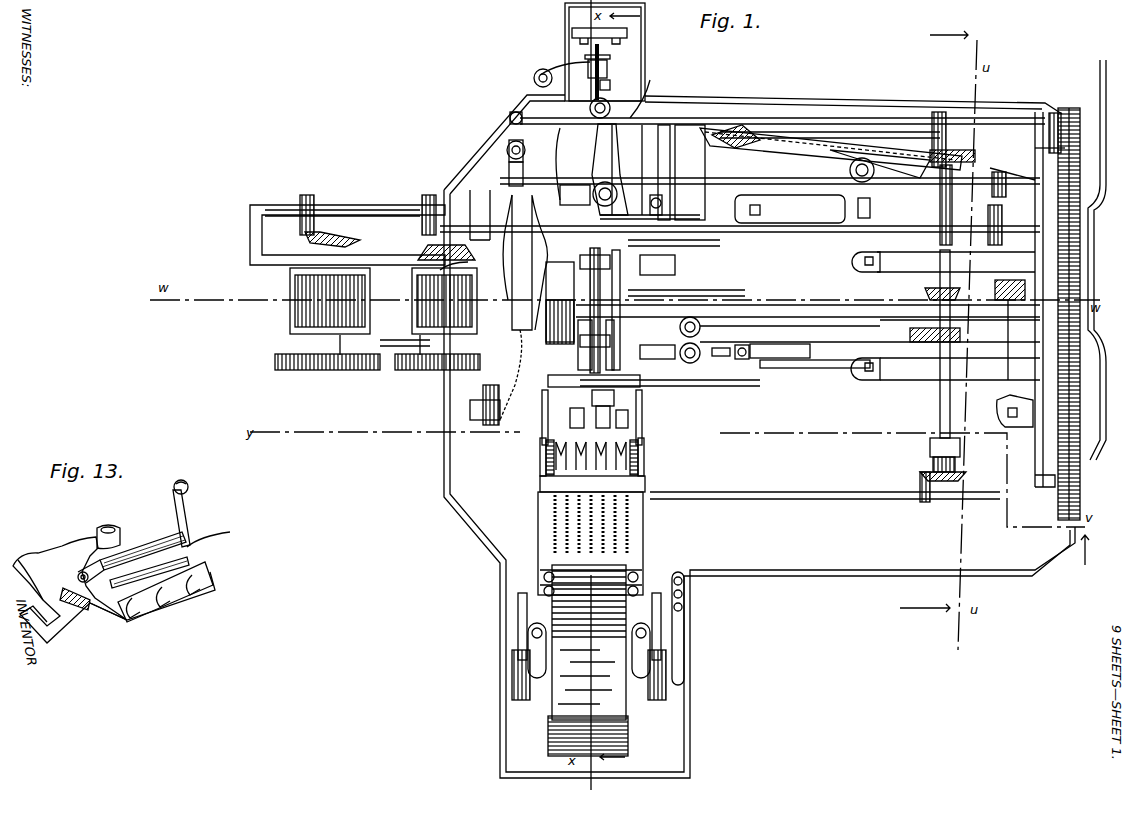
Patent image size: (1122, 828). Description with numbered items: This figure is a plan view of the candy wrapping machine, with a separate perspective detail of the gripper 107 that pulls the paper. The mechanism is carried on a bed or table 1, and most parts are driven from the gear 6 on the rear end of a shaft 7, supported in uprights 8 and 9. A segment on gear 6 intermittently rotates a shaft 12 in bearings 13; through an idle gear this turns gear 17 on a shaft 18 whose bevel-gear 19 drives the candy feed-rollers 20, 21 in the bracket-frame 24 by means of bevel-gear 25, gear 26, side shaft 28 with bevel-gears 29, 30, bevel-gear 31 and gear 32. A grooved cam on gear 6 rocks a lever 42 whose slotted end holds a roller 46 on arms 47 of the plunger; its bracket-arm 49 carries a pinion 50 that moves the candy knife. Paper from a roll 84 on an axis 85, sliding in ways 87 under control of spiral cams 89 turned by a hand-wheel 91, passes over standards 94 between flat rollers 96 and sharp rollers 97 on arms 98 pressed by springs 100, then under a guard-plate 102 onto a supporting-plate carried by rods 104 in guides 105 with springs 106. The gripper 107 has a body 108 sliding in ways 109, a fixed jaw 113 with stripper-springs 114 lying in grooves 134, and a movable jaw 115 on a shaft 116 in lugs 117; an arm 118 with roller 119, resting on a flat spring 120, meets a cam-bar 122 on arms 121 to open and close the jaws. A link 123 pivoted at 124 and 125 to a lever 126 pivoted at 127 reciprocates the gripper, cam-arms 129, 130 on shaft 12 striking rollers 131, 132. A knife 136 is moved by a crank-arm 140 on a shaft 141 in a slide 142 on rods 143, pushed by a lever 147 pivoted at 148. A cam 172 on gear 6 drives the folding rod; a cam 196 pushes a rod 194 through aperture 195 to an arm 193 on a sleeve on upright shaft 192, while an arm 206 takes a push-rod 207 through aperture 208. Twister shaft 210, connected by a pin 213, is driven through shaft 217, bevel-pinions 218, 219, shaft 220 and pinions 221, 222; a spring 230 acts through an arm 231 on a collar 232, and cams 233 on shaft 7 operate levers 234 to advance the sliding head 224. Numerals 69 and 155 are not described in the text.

In FIG. 1, the bed or table 1 is at (908, 570).
In FIG. 1, the gear 6 is at (1080, 385).
In FIG. 1, the shaft 7 is at (803, 306).
In FIG. 1, the upright or bracket 8 is at (988, 388).
In FIG. 1, the upright or bracket 9 is at (560, 302).
In FIG. 1, the longitudinal shaft 12 is at (780, 180).
In FIG. 1, the bearings 13 is at (866, 200).
In FIG. 1, the gear 17 is at (988, 215).
In FIG. 1, the longitudinal shaft 18 is at (825, 230).
In FIG. 1, the bevel-gear 19 is at (474, 200).
In FIG. 1, the feed-rollers 20 is at (293, 318).
In FIG. 1, the feed-rollers 21 is at (420, 328).
In FIG. 1, the bracket-frame 24 is at (266, 265).
In FIG. 1, the bevel-gear 25 is at (450, 262).
In FIG. 1, the gear 26 is at (415, 370).
In FIG. 1, the side shaft 28 is at (350, 214).
In FIG. 1, the bevel-gear 29 is at (425, 195).
In FIG. 1, the bevel-gear 30 is at (305, 195).
In FIG. 1, the bevel-gear 31 is at (322, 230).
In FIG. 1, the gear 32 is at (305, 370).
In FIG. 1, the lever 42 is at (1012, 320).
In FIG. 1, the roller 46 is at (557, 322).
In FIG. 1, the arms 47 is at (612, 256).
In FIG. 1, the bracket-arm 49 is at (619, 345).
In FIG. 1, the pinion 50 is at (576, 345).
In FIG. 1, the rod 69 is at (624, 258).
In FIG. 1, the roll of paper 84 is at (612, 740).
In FIG. 1, the axis 85 is at (589, 642).
In FIG. 1, the vertical ways 87 is at (589, 661).
In FIG. 1, the spiral cams 89 is at (522, 593).
In FIG. 1, the hand-wheel 91 is at (694, 628).
In FIG. 1, the standards 94 is at (538, 535).
In FIG. 1, the flat rollers 96 is at (570, 418).
In FIG. 1, the rollers 97 is at (620, 419).
In FIG. 1, the arms 98 is at (592, 484).
In FIG. 1, the spring 100 is at (556, 506).
In FIG. 1, the guard-plate 102 is at (594, 380).
In FIG. 1, the rods 104 is at (642, 410).
In FIG. 1, the guides or keepers 105 is at (546, 451).
In FIG. 1, the springs 106 is at (540, 470).
In FIG. 1, the gripper 107 is at (650, 241).
In FIG. 13, the gripper 107 is at (108, 529).
In FIG. 1, the slide or body 108 is at (565, 135).
In FIG. 13, the slide or body 108 is at (38, 558).
In FIG. 1, the ways 109 is at (560, 153).
In FIG. 13, the fixed jaw 113 is at (130, 618).
In FIG. 13, the stripper-springs 114 is at (205, 580).
In FIG. 13, the movable jaw 115 is at (196, 558).
In FIG. 13, the shaft 116 is at (78, 576).
In FIG. 13, the lugs 117 is at (160, 540).
In FIG. 1, the arm 118 is at (652, 215).
In FIG. 13, the arm 118 is at (190, 528).
In FIG. 13, the antifriction-roller 119 is at (187, 490).
In FIG. 1, the flat spring 120 is at (662, 205).
In FIG. 13, the flat spring 120 is at (225, 534).
In FIG. 1, the arms 121 is at (676, 268).
In FIG. 1, the cam-bar 122 is at (640, 292).
In FIG. 1, the link 123 is at (612, 157).
In FIG. 1, the pivot 124 is at (598, 185).
In FIG. 1, the pivot 125 is at (592, 106).
In FIG. 1, the lever 126 is at (831, 149).
In FIG. 1, the pivot 127 is at (874, 173).
In FIG. 1, the cam-arm 129 is at (935, 200).
In FIG. 1, the cam-arm 130 is at (710, 162).
In FIG. 1, the antifriction-roller 131 is at (950, 156).
In FIG. 1, the antifriction-roller 132 is at (730, 130).
In FIG. 13, the grooves 134 is at (190, 590).
In FIG. 1, the knife 136 is at (670, 381).
In FIG. 1, the crank-arm 140 is at (746, 361).
In FIG. 1, the shaft 141 is at (725, 360).
In FIG. 1, the slide 142 is at (716, 331).
In FIG. 1, the vertical rods 143 is at (700, 322).
In FIG. 1, the lever 147 is at (785, 345).
In FIG. 1, the pivot 148 is at (870, 334).
In FIG. 1, the block 155 is at (575, 200).
In FIG. 1, the cam 172 is at (1103, 52).
In FIG. 1, the upright shaft 192 is at (503, 152).
In FIG. 1, the arm 193 is at (512, 113).
In FIG. 1, the rod 194 is at (618, 117).
In FIG. 1, the guiding-aperture 195 is at (1035, 116).
In FIG. 1, the cam 196 is at (1055, 113).
In FIG. 1, the arm 206 is at (509, 176).
In FIG. 1, the push-rod 207 is at (790, 209).
In FIG. 1, the guiding-aperture 208 is at (1002, 166).
In FIG. 1, the shaft 210 is at (600, 86).
In FIG. 1, the pin 213 is at (989, 181).
In FIG. 1, the longitudinal shaft 217 is at (771, 488).
In FIG. 1, the bevel-pinion 218 is at (945, 120).
In FIG. 1, the bevel-pinion 219 is at (958, 478).
In FIG. 1, the shaft 220 is at (940, 413).
In FIG. 1, the bevel-pinion 221 is at (950, 338).
In FIG. 1, the bevel-pinion 222 is at (1000, 289).
In FIG. 1, the sliding head 224 is at (614, 404).
In FIG. 1, the spring 230 is at (534, 73).
In FIG. 1, the arm 231 is at (560, 66).
In FIG. 1, the collar 232 is at (650, 80).
In FIG. 1, the cams 233 is at (520, 280).
In FIG. 1, the lever 234 is at (495, 372).